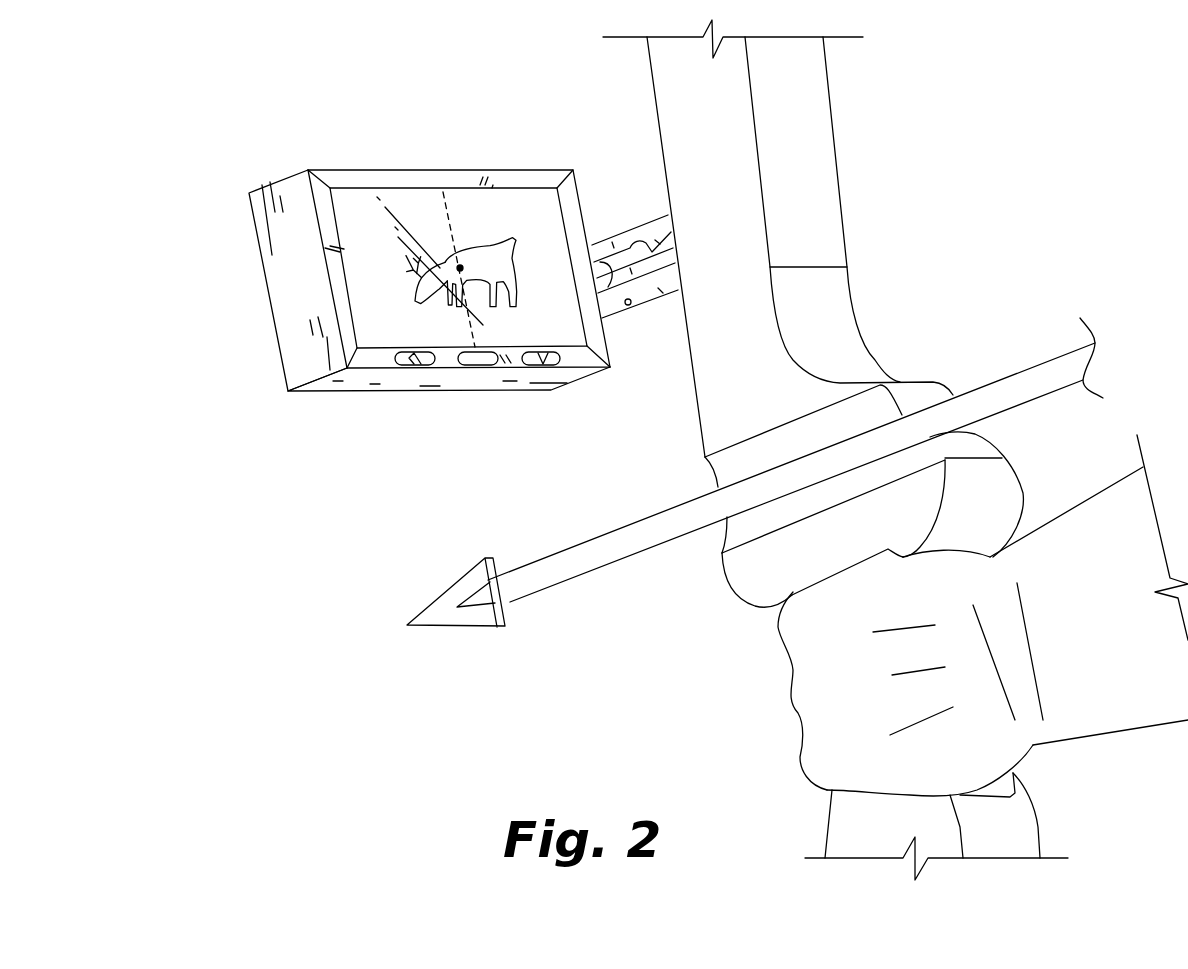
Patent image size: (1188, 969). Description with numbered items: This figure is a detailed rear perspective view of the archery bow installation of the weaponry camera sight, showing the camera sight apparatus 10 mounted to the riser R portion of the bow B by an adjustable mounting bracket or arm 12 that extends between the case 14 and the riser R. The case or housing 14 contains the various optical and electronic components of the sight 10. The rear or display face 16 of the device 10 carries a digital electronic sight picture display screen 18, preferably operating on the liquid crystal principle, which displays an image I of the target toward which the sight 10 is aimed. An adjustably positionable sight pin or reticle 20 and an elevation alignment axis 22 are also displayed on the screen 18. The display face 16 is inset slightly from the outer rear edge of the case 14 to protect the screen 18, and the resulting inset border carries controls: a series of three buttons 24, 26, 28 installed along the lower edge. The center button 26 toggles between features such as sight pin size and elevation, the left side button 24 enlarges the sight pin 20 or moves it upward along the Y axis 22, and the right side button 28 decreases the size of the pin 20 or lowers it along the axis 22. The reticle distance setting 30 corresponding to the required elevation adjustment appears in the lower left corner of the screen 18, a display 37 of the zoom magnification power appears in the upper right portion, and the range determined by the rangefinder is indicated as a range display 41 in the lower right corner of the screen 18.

The camera sight apparatus 10 is at (220, 421).
The adjustable mounting bracket or arm 12 is at (628, 220).
The case or housing 14 is at (283, 290).
The rear or display face 16 is at (349, 203).
The digital electronic sight picture display screen 18 is at (397, 197).
The sight pin or reticle 20 is at (495, 242).
The elevation alignment axis 22 is at (442, 205).
The image of the target I is at (474, 240).
The left side button 24 is at (417, 363).
The center button 26 is at (480, 365).
The right side button 28 is at (543, 362).
The sight pin distance setting 30 is at (377, 347).
The magnification power display 37 is at (548, 197).
The range display 41 is at (577, 338).
The riser R is at (837, 128).
The bow B is at (1040, 810).